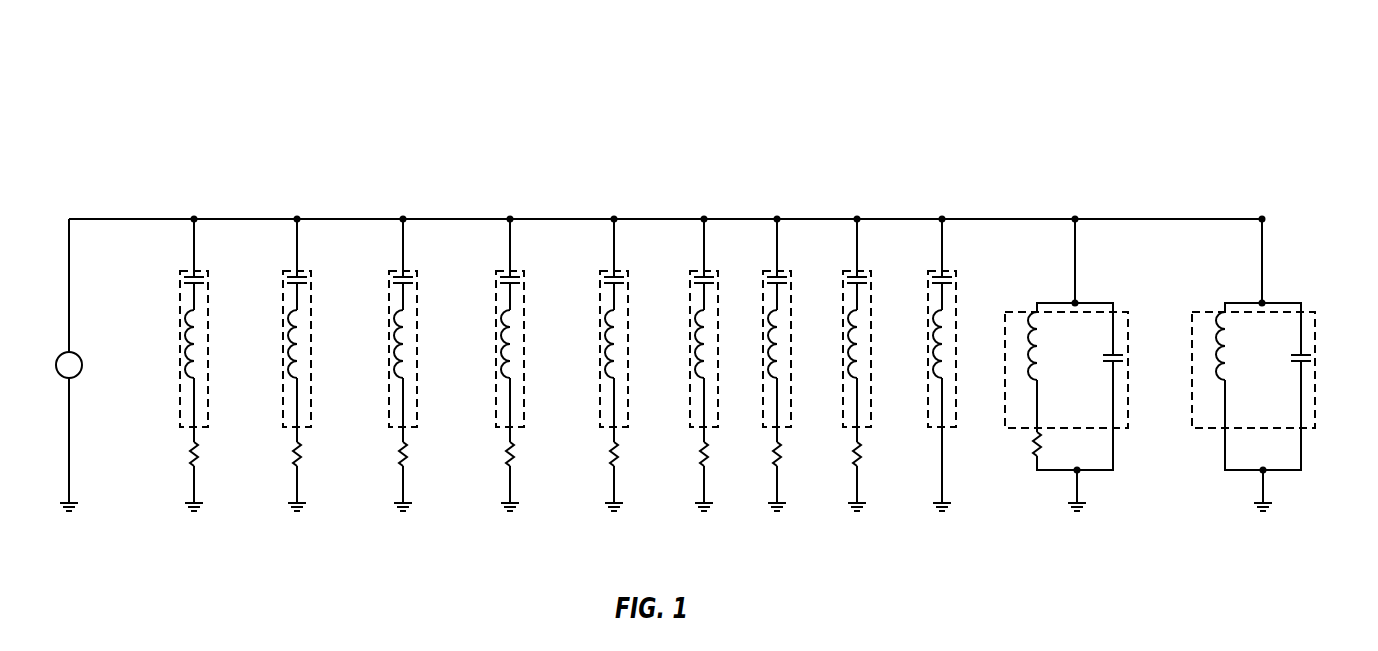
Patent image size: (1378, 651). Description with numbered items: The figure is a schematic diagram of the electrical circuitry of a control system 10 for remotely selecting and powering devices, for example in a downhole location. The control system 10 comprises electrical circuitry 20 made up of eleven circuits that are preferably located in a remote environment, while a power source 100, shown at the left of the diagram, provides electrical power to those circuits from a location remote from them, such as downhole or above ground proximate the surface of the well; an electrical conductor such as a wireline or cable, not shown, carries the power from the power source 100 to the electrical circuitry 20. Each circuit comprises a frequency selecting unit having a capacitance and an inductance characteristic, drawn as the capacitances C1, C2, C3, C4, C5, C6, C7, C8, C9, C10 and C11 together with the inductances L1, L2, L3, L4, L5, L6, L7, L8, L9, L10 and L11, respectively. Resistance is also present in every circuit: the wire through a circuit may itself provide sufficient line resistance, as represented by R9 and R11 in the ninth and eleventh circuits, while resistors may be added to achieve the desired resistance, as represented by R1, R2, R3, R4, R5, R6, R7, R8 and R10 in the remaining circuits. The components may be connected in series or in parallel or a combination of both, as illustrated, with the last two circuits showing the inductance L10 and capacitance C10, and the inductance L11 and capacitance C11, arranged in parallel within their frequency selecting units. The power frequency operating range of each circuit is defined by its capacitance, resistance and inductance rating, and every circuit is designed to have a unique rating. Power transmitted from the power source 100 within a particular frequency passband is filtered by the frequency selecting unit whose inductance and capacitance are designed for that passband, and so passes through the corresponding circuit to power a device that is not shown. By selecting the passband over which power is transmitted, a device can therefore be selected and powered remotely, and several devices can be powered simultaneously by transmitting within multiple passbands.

The control system 10 is at (1069, 78).
The electrical circuitry 20 is at (142, 143).
The power source 100 is at (80, 482).
The capacitance C1 is at (174, 285).
The capacitance C2 is at (277, 285).
The capacitance C3 is at (383, 285).
The capacitance C4 is at (490, 285).
The capacitance C5 is at (597, 285).
The capacitance C6 is at (686, 285).
The capacitance C7 is at (760, 285).
The capacitance C8 is at (839, 285).
The capacitance C9 is at (924, 285).
The capacitance C10 is at (1141, 358).
The capacitance C11 is at (1327, 347).
The inductance L1 is at (172, 344).
The inductance L2 is at (271, 344).
The inductance L3 is at (380, 344).
The inductance L4 is at (486, 344).
The inductance L5 is at (593, 344).
The inductance L6 is at (682, 344).
The inductance L7 is at (757, 344).
The inductance L8 is at (837, 344).
The inductance L9 is at (921, 344).
The inductance L10 is at (1054, 346).
The inductance L11 is at (1243, 346).
The resistor R1 is at (176, 456).
The resistor R2 is at (280, 456).
The resistor R3 is at (387, 456).
The resistor R4 is at (492, 456).
The resistor R5 is at (598, 456).
The resistor R6 is at (687, 456).
The resistor R7 is at (761, 456).
The resistor R8 is at (841, 456).
The line resistance R9 is at (942, 462).
The resistor R10 is at (1015, 447).
The line resistance R11 is at (1263, 487).